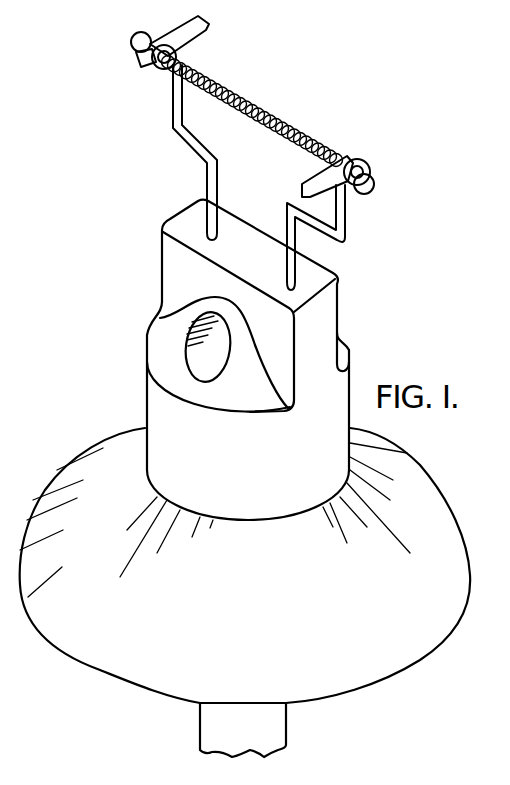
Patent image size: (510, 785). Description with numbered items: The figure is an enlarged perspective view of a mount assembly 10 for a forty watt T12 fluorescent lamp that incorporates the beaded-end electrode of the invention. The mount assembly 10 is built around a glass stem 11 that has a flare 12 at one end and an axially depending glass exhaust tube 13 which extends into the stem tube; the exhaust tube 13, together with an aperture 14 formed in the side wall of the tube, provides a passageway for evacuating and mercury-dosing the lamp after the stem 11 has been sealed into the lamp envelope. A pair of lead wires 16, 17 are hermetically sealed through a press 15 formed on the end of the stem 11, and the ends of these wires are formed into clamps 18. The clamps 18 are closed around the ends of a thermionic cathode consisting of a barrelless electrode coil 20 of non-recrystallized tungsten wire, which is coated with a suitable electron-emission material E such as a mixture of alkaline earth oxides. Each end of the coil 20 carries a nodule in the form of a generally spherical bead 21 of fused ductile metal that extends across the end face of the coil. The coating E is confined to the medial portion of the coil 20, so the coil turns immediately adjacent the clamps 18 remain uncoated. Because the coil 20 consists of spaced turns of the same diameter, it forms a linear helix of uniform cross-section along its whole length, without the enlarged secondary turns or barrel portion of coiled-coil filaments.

The mount assembly 10 is at (108, 386).
The glass stem 11 is at (162, 410).
The flare 12 is at (120, 651).
The glass exhaust tube 13 is at (213, 723).
The aperture 14 is at (204, 340).
The press 15 is at (170, 265).
The lead wire 16 is at (335, 234).
The lead wire 17 is at (173, 129).
The clamps 18 is at (208, 19).
The barrelless electrode coil 20 is at (164, 74).
The spherical bead 21 is at (373, 180).
The electron-emission material E is at (266, 129).